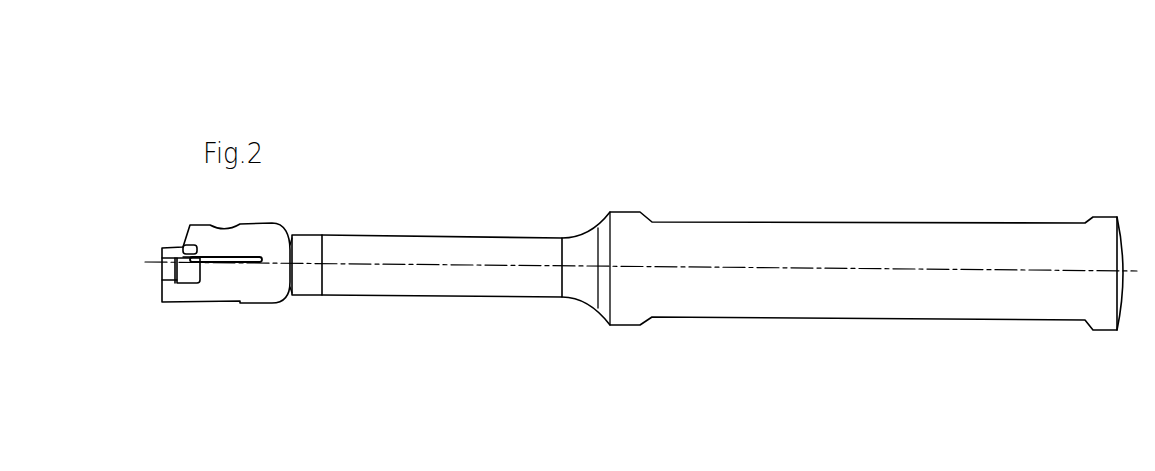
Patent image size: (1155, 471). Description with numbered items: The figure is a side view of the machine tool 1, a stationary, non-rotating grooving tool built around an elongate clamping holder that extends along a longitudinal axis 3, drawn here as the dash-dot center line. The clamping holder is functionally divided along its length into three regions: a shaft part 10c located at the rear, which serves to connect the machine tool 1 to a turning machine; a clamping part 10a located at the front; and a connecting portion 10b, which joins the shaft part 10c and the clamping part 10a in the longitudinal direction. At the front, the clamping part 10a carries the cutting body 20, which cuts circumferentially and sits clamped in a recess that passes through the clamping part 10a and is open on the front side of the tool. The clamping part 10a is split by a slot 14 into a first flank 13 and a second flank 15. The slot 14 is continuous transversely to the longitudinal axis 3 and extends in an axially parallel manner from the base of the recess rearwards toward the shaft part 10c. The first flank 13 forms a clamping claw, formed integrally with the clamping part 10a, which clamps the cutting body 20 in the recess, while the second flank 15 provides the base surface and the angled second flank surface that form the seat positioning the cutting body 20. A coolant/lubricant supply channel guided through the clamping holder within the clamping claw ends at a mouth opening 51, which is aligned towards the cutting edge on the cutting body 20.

The machine tool 1 is at (590, 117).
The longitudinal axis 3 is at (978, 272).
The clamping part 10a is at (322, 395).
The connecting portion 10b is at (607, 395).
The shaft part 10c is at (1128, 395).
The first flank 13 is at (247, 240).
The slot 14 is at (222, 262).
The second flank 15 is at (245, 283).
The cutting body 20 is at (167, 275).
The mouth opening 51 is at (185, 243).